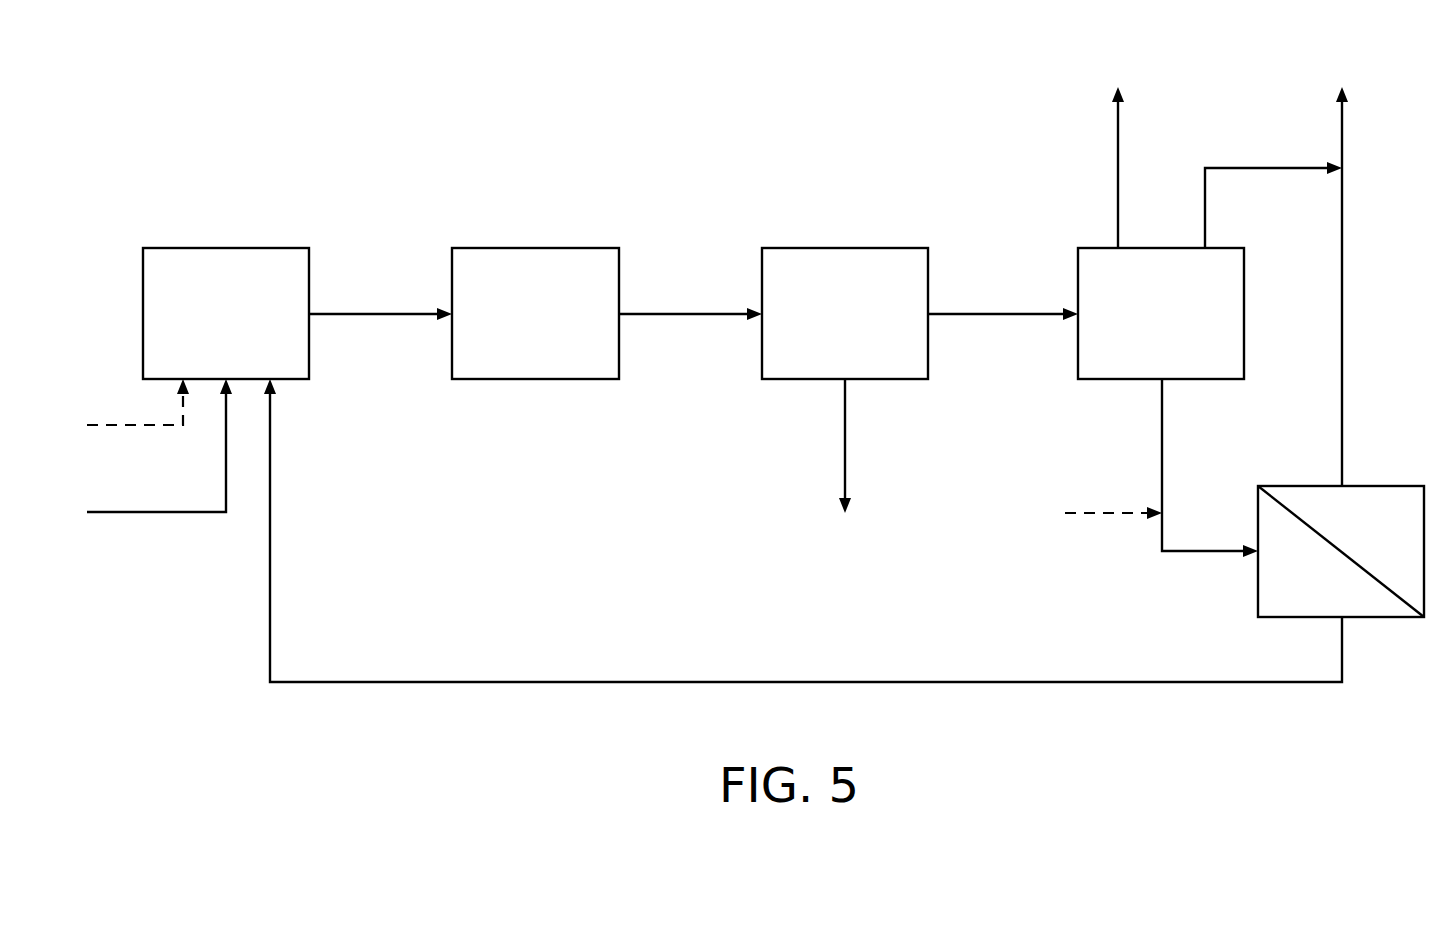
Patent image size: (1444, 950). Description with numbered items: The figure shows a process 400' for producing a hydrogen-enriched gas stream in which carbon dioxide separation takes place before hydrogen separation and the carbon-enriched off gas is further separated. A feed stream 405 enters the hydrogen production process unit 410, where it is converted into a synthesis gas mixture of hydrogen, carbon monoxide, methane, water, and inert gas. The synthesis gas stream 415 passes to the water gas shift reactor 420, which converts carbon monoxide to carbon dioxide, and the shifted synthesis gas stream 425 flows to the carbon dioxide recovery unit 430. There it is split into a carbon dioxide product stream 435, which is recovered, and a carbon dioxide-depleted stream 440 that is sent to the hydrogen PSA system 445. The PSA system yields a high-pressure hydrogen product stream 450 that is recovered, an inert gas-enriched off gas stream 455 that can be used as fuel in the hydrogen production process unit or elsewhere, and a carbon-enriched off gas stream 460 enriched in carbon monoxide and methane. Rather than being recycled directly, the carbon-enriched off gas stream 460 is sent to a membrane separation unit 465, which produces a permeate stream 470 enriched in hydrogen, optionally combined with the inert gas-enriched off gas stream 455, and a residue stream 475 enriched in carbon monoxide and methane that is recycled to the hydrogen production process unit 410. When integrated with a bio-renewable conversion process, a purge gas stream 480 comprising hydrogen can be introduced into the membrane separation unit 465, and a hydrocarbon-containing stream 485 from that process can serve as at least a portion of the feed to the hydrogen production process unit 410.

The process 400' is at (140, 101).
The feed stream 405 is at (158, 512).
The hydrogen production process unit 410 is at (228, 248).
The synthesis gas stream 415 is at (383, 312).
The water gas shift reactor 420 is at (538, 248).
The shifted synthesis gas stream 425 is at (693, 312).
The carbon dioxide recovery unit 430 is at (846, 248).
The carbon dioxide product stream 435 is at (845, 445).
The carbon dioxide-depleted stream 440 is at (1006, 312).
The hydrogen PSA system 445 is at (1244, 315).
The high-pressure hydrogen product stream 450 is at (1118, 168).
The inert gas-enriched off gas stream 455 is at (1276, 168).
The carbon-enriched off gas stream 460 is at (1162, 433).
The membrane separation unit 465 is at (1298, 486).
The permeate stream 470 is at (1342, 270).
The residue stream 475 is at (1342, 650).
The purge gas stream 480 is at (1103, 513).
The hydrocarbon-containing stream 485 is at (97, 424).